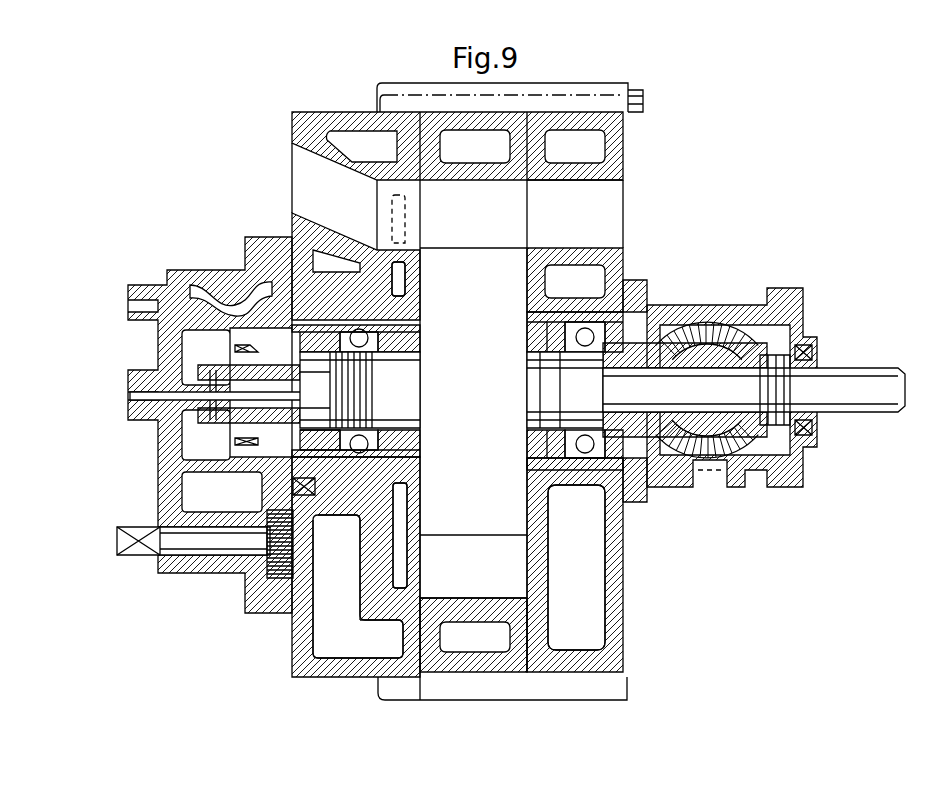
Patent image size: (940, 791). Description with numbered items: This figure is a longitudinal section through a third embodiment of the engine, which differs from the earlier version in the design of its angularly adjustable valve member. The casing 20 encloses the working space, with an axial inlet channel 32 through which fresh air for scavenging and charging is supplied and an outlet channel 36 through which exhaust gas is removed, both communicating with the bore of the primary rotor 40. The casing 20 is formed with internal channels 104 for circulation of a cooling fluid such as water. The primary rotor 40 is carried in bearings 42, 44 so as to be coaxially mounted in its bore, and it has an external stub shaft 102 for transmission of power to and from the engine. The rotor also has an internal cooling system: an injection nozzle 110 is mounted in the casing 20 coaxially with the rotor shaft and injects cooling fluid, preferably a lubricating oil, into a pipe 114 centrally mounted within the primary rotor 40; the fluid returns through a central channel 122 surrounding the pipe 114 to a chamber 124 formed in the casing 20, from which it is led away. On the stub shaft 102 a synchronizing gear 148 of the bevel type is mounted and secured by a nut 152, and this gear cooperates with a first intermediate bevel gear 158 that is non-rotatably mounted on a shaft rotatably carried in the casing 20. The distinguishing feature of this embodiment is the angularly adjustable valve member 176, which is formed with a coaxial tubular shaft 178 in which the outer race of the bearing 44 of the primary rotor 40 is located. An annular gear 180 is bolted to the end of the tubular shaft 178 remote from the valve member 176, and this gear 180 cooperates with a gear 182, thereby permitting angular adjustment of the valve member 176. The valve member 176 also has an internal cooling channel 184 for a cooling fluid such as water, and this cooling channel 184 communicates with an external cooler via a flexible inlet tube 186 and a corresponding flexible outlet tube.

The casing 20 is at (548, 69).
The inlet channel 32 is at (615, 222).
The outlet channel 36 is at (293, 182).
The primary rotor 40 is at (530, 525).
The bearing 42 is at (578, 486).
The bearing 44 is at (377, 420).
The external stub shaft 102 is at (845, 376).
The internal channels 104 is at (362, 128).
The injection nozzle 110 is at (214, 380).
The pipe 114 is at (263, 388).
The central channel 122 is at (268, 418).
The chamber 124 is at (170, 448).
The synchronizing gear 148 is at (642, 305).
The nut 152 is at (806, 326).
The first intermediate bevel gear 158 is at (700, 305).
The angularly adjustable valve member 176 is at (412, 480).
The coaxial tubular shaft 178 is at (330, 513).
The annular gear 180 is at (265, 512).
The gear 182 is at (303, 562).
The internal cooling channel 184 is at (420, 290).
The flexible inlet tube 186 is at (222, 282).